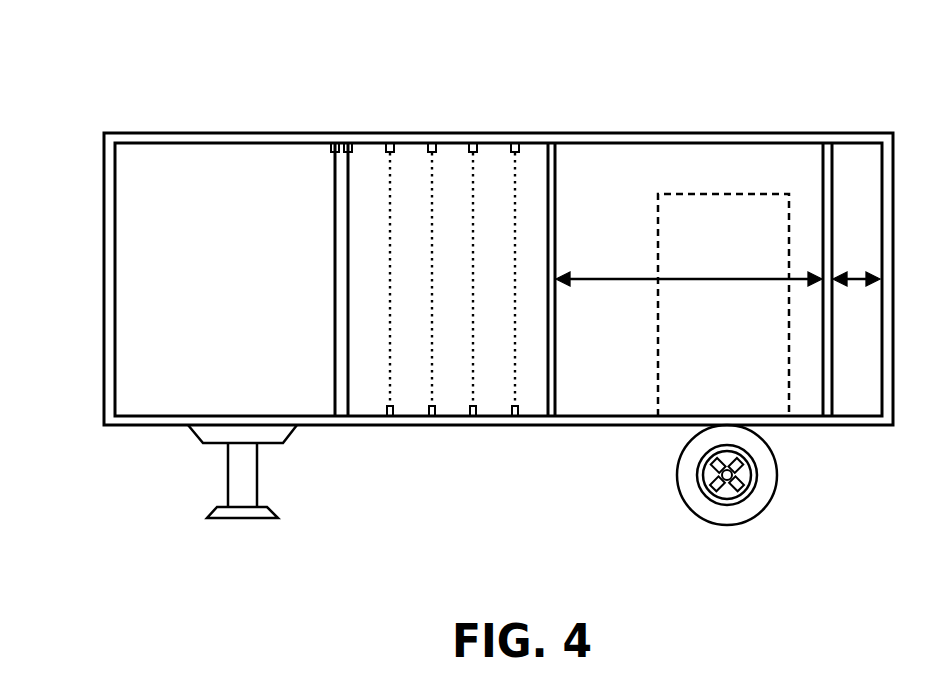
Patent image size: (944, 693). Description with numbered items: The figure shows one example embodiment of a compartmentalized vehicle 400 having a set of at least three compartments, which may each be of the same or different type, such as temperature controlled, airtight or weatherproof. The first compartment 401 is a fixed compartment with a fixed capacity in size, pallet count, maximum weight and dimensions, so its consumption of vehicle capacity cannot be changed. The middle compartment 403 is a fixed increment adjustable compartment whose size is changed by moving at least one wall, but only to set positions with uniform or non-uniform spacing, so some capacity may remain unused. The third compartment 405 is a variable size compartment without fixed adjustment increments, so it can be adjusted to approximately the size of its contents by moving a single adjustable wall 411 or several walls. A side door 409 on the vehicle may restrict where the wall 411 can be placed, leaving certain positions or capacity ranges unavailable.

The vehicle 400 is at (98, 113).
The first compartment 401 is at (145, 352).
The middle compartment 403 is at (450, 408).
The third compartment 405 is at (603, 395).
The side door 409 is at (756, 387).
The wall 411 is at (828, 143).